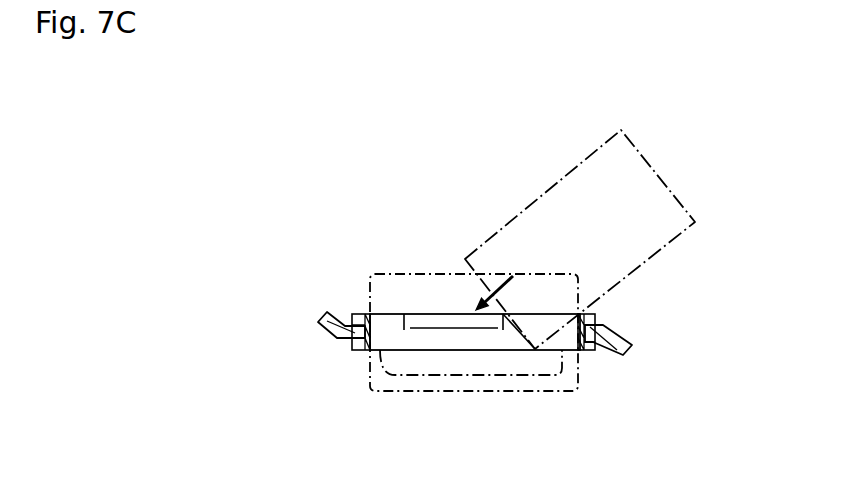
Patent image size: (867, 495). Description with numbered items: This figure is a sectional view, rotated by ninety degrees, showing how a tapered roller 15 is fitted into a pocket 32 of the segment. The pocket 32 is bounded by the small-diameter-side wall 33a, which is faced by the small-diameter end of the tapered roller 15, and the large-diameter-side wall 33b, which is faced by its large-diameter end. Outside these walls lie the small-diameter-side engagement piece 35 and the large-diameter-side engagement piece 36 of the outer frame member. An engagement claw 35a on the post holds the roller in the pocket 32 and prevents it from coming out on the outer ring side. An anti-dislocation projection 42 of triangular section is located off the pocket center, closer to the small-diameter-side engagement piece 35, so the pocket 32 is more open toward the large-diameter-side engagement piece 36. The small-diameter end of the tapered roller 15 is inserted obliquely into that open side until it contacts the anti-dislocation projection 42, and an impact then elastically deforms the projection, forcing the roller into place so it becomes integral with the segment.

The tapered roller 15 is at (395, 273).
The pocket 32 is at (405, 345).
The small-diameter-side wall 33a is at (355, 317).
The large-diameter-side wall 33b is at (589, 352).
The small-diameter-side engagement piece 35 is at (330, 332).
The engagement claw 35a is at (479, 376).
The large-diameter-side engagement piece 36 is at (627, 321).
The anti-dislocation projection 42 is at (432, 322).